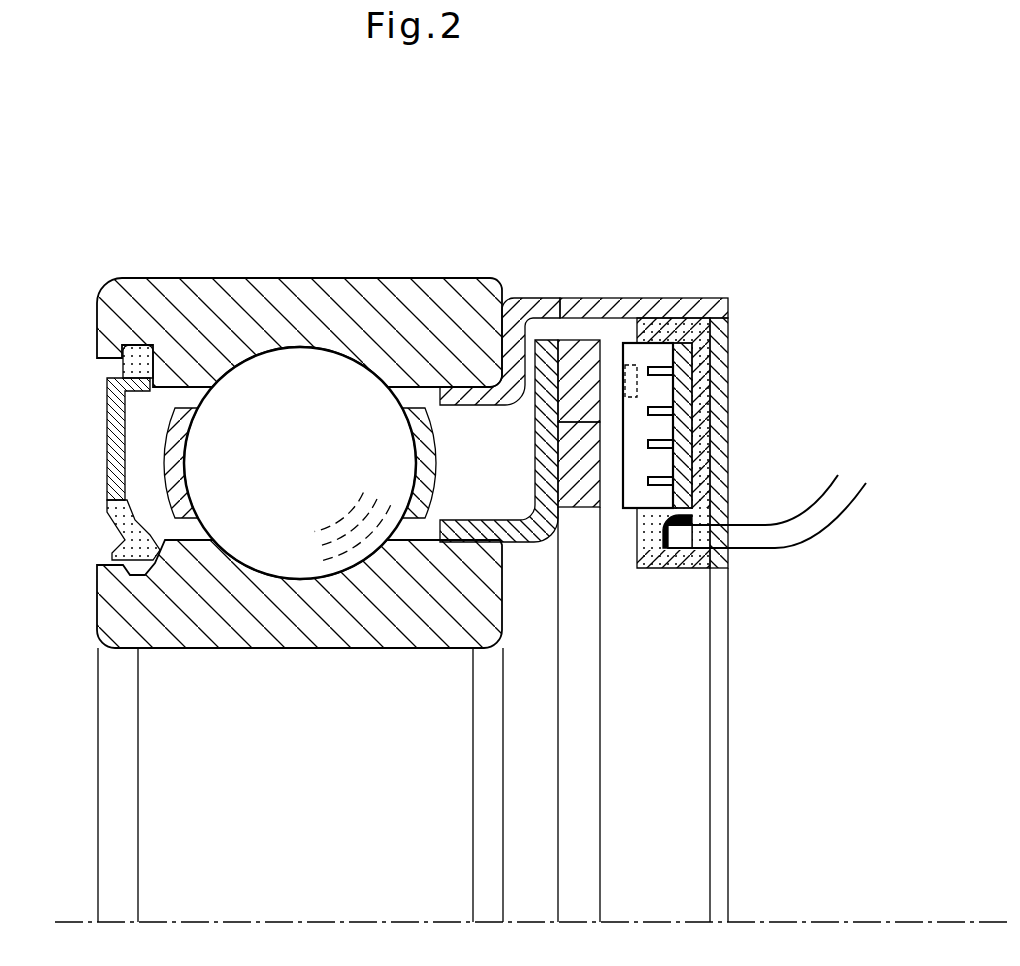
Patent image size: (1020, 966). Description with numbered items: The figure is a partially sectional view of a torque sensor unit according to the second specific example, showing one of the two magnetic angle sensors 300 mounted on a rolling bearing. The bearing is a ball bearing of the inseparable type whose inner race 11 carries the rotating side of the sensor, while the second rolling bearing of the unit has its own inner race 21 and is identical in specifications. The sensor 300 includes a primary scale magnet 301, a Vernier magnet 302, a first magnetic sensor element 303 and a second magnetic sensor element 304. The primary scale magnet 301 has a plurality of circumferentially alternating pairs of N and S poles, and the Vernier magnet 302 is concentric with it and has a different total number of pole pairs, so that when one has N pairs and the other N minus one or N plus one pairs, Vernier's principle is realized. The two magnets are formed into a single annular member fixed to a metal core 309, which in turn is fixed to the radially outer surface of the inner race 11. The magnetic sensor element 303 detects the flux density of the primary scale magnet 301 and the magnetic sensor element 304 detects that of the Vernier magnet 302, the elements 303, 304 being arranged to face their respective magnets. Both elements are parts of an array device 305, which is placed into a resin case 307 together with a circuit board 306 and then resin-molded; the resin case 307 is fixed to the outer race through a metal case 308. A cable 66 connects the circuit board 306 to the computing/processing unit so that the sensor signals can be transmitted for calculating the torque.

The first inner race 11 is at (291, 622).
The second inner race 21 is at (289, 305).
The cable 66 is at (812, 523).
The magnetic angle sensor 300 is at (560, 292).
The primary scale magnet 301 is at (586, 500).
The Vernier magnet 302 is at (583, 360).
The first magnetic sensor element 303 is at (680, 470).
The second magnetic sensor element 304 is at (637, 380).
The array device 305 is at (657, 342).
The circuit board 306 is at (705, 428).
The resin case 307 is at (690, 330).
The metal case 308 is at (507, 300).
The metal core 309 is at (512, 538).